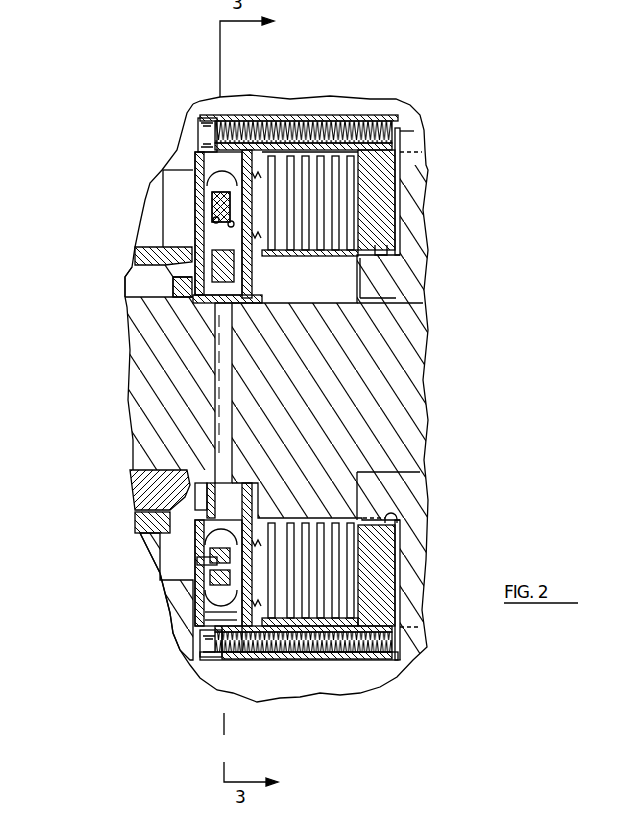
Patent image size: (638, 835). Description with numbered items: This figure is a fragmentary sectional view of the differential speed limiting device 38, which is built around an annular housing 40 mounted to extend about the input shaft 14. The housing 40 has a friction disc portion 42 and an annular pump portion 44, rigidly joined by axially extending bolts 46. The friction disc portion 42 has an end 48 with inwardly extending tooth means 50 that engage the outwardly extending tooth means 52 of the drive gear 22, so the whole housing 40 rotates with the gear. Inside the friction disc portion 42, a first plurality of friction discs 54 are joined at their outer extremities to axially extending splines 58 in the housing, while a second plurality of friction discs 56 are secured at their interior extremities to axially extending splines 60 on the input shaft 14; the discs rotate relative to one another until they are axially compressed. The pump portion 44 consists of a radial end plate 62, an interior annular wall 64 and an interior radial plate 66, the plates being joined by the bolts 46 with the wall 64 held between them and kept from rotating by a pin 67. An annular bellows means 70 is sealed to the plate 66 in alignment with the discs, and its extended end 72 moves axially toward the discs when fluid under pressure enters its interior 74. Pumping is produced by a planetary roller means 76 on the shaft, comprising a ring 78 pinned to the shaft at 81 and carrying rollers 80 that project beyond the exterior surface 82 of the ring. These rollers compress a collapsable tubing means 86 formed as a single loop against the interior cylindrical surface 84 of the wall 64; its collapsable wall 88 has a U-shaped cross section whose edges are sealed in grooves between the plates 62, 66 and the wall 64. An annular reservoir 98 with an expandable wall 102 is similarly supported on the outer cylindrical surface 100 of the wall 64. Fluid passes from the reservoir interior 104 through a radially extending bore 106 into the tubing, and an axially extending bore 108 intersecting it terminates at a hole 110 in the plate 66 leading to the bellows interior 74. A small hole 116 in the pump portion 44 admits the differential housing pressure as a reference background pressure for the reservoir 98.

The input shaft 14 is at (150, 374).
The drive gear 22 is at (420, 194).
The differential speed limiting device 38 is at (307, 106).
The annular housing 40 is at (336, 106).
The friction disc portion 42 is at (387, 188).
The pump portion 44 is at (180, 169).
The bolts 46 is at (360, 140).
The end 48 is at (399, 221).
The inwardly extending tooth means 50 is at (386, 247).
The outwardly extending tooth means 52 is at (372, 261).
The first plurality of friction discs 54 is at (320, 662).
The second plurality of friction discs 56 is at (345, 645).
The axially extending splines 58 is at (280, 663).
The axially extending splines 60 is at (340, 525).
The radial end plate 62 is at (196, 544).
The interior annular wall 64 is at (196, 559).
The interior radial plate 66 is at (182, 595).
The pin 67 is at (196, 577).
The annular bellows means 70 is at (232, 662).
The extended end 72 is at (246, 663).
The interior 74 is at (210, 660).
The planetary roller means 76 is at (210, 307).
The ring 78 is at (170, 487).
The rollers 80 is at (200, 297).
The pin location 81 is at (220, 461).
The exterior surface 82 is at (185, 514).
The interior cylindrical surface 84 is at (200, 534).
The collapsable tubing means 86 is at (180, 241).
The collapsable wall 88 is at (195, 268).
The annular reservoir 98 is at (200, 605).
The outer cylindrical surface 100 is at (200, 629).
The expandable wall 102 is at (215, 655).
The interior 104 is at (210, 642).
The radially extending bore 106 is at (196, 251).
The axially extending bore 108 is at (196, 227).
The hole 110 is at (268, 126).
The small hole 116 is at (194, 156).